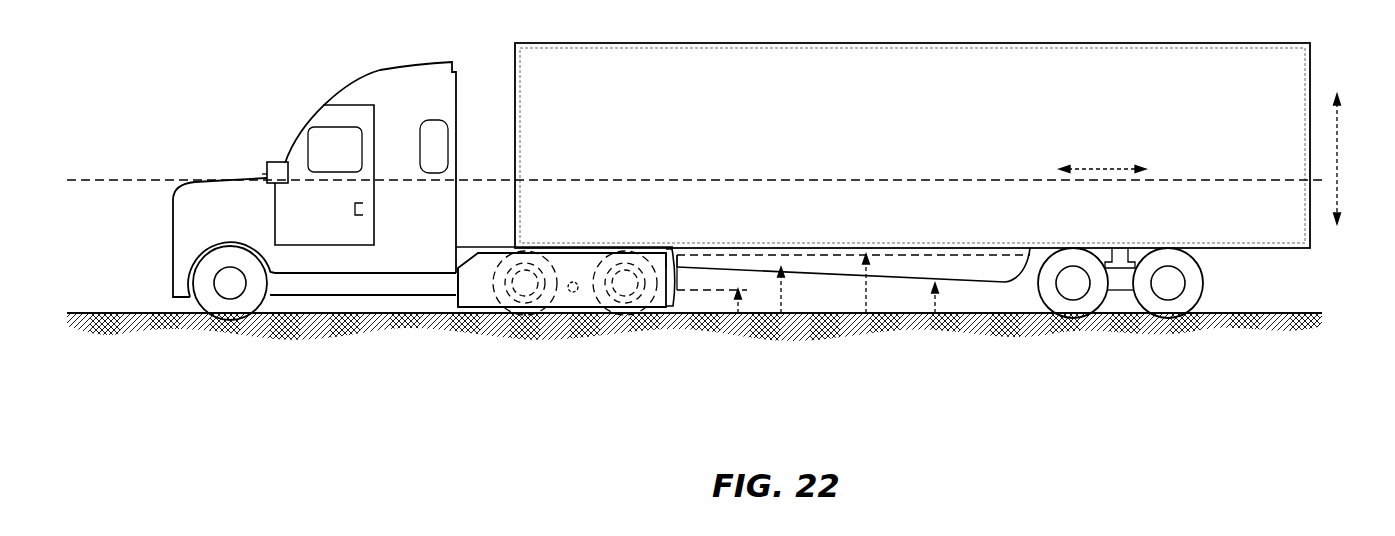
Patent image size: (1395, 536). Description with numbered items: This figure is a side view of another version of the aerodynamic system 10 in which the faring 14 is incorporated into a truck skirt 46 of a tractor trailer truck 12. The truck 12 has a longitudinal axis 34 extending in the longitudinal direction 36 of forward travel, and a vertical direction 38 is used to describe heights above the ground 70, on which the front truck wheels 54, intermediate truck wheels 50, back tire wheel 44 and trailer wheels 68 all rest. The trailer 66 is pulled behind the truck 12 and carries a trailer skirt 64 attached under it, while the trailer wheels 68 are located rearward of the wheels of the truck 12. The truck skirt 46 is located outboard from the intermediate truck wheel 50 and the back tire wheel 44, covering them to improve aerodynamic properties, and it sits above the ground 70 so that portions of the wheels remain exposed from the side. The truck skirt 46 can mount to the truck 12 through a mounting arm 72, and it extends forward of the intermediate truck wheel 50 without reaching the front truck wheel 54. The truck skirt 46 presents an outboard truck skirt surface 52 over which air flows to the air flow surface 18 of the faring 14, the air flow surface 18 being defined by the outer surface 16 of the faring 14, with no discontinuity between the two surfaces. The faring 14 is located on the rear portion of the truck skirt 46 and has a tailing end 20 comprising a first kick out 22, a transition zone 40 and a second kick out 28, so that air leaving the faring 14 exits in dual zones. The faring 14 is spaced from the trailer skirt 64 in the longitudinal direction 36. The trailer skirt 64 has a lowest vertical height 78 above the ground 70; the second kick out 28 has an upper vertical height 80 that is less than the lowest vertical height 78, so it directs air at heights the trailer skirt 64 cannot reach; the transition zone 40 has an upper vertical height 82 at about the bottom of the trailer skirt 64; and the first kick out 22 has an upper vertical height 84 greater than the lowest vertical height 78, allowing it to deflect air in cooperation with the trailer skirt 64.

The aerodynamic system 10 is at (731, 400).
The truck 12 is at (380, 70).
The faring 14 is at (663, 307).
The outer surface 16 is at (573, 239).
The air flow surface 18 is at (660, 257).
The tailing end 20 is at (653, 250).
The first kick out 22 is at (675, 252).
The second kick out 28 is at (673, 298).
The longitudinal axis 34 is at (900, 182).
The longitudinal direction 36 is at (1107, 168).
The vertical direction 38 is at (1338, 158).
The transition zone 40 is at (677, 278).
The back tire wheel 44 is at (625, 308).
The truck skirt 46 is at (463, 307).
The intermediate truck wheels 50 is at (525, 310).
The truck skirt surface 52 is at (472, 284).
The front truck wheels 54 is at (217, 302).
The skirt 64 is at (920, 260).
The trailer 66 is at (858, 128).
The trailer wheels 68 is at (1062, 307).
The ground 70 is at (1238, 309).
The mounting arm 72 is at (574, 292).
The lowest vertical height 78 is at (936, 308).
The upper vertical height 80 is at (740, 308).
The upper vertical height 82 is at (782, 302).
The upper vertical height 84 is at (867, 308).